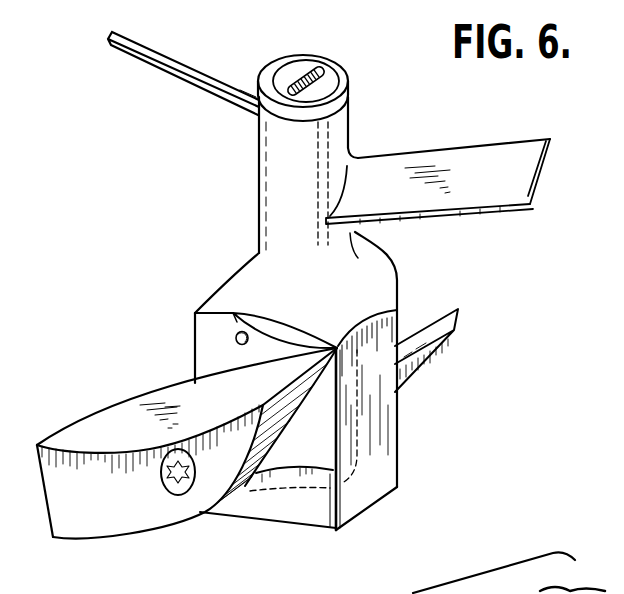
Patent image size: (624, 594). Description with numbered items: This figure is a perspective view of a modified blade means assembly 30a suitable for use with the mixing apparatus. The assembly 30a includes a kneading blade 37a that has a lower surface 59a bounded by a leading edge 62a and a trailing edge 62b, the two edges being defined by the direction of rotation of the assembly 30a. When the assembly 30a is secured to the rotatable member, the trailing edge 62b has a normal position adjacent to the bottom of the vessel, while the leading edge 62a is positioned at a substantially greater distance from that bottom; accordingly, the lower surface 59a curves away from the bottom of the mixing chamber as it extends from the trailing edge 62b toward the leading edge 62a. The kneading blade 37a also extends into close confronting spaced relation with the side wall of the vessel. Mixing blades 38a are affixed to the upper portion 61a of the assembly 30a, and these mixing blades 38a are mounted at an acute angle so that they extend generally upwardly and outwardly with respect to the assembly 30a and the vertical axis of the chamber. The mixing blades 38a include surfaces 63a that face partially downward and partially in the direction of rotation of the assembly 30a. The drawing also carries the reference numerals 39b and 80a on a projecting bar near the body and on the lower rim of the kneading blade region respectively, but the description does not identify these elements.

The modified assembly 30a is at (278, 192).
The kneading blade 37a is at (63, 440).
The mixing blades 38a is at (181, 62).
The bar 39b is at (452, 331).
The lower surface 59a is at (307, 402).
The upper portion 61a is at (333, 131).
The leading edge 62a is at (292, 382).
The trailing edge 62b is at (53, 538).
The surfaces 63a is at (207, 91).
The rim 80a is at (263, 480).